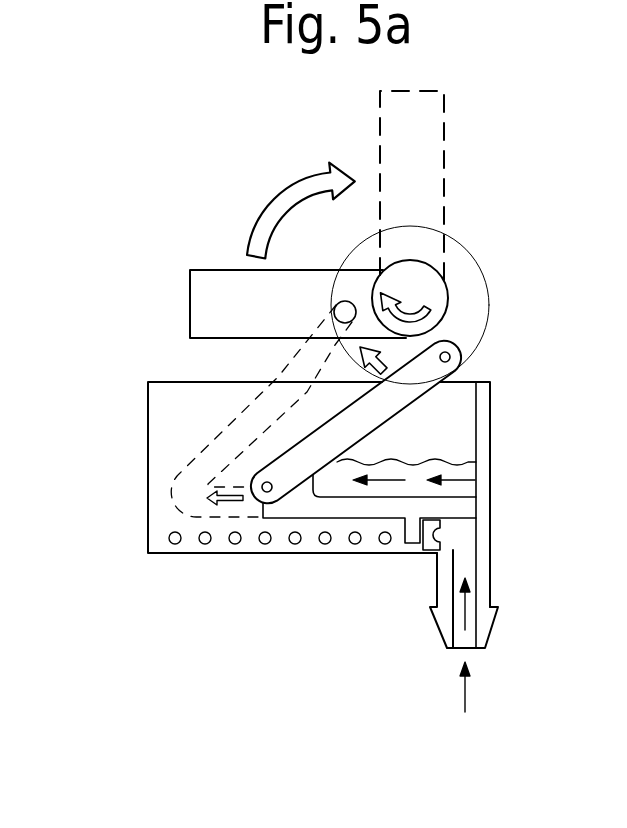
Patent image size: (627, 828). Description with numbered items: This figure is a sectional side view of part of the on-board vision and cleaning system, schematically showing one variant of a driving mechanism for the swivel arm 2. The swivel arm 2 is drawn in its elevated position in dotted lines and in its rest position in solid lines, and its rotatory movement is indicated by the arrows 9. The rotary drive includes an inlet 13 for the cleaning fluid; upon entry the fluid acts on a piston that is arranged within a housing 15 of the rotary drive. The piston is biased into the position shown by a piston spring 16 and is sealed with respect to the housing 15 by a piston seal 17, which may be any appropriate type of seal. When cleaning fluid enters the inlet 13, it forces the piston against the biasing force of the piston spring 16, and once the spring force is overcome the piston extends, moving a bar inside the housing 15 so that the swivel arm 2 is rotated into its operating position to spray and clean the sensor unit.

The swivel arm 2 is at (200, 308).
The arrows 9 is at (285, 198).
The inlet 13 is at (447, 528).
The housing 15 is at (148, 473).
The piston spring 16 is at (205, 543).
The piston seal 17 is at (423, 560).